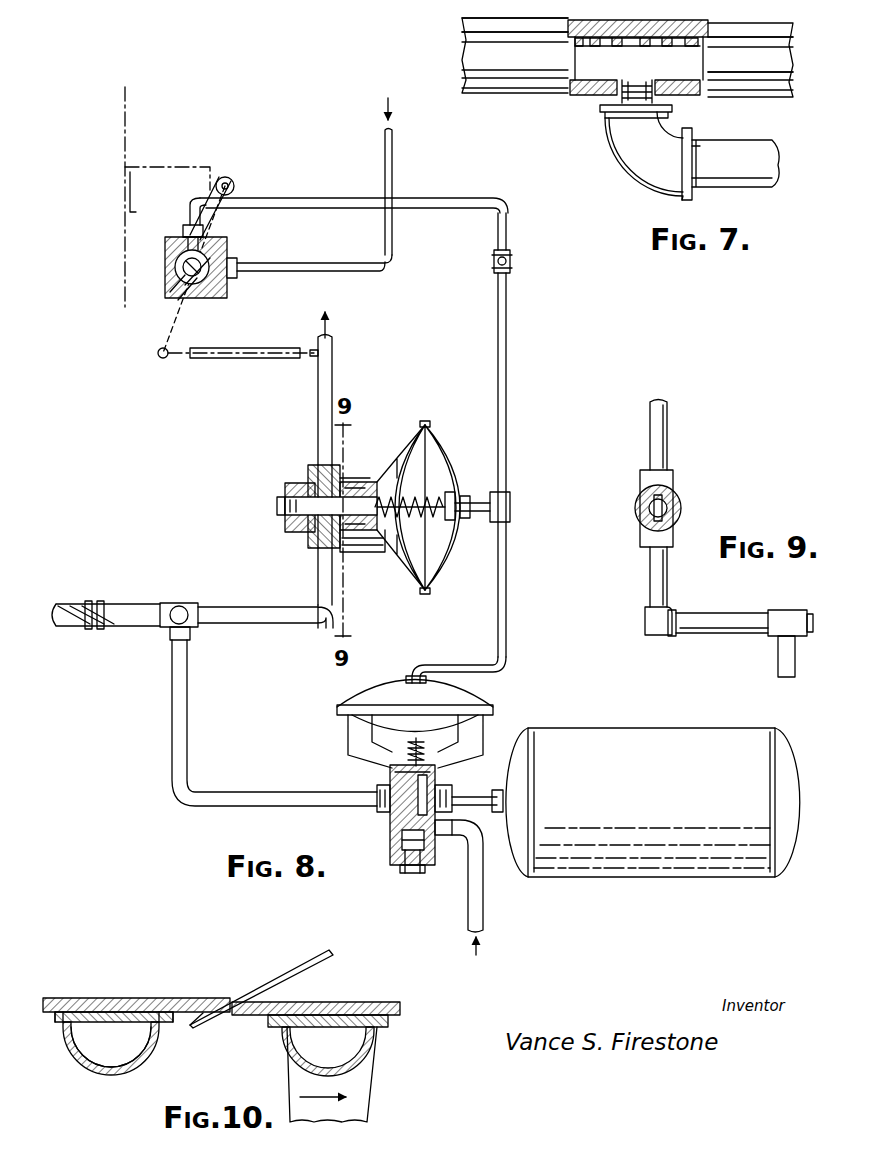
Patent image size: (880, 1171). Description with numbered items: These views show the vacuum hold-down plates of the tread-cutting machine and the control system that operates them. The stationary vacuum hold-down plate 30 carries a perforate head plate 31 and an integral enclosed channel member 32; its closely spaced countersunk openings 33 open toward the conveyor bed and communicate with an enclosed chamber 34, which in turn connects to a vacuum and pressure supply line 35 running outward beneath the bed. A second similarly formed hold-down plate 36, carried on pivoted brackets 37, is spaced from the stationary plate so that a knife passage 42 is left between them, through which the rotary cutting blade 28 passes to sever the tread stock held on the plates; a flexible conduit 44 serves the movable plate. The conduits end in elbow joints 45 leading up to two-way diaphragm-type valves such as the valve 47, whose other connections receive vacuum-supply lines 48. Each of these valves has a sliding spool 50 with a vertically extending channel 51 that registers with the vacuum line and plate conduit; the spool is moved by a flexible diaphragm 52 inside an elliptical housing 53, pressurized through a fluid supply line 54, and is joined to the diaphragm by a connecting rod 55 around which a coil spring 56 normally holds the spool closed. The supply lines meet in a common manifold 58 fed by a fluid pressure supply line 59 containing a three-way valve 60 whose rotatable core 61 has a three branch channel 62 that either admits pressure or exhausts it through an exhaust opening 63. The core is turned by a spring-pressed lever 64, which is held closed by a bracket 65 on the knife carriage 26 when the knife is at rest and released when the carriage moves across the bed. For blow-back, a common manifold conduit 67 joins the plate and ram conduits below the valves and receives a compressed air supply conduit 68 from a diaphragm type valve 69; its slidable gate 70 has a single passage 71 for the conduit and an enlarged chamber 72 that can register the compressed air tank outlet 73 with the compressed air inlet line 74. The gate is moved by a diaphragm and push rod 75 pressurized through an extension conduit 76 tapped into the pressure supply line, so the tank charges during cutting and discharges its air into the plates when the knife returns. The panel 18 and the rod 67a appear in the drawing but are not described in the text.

In FIG. 7, the instrument panel 18 is at (770, 33).
In FIG. 10, the instrument panel 18 is at (150, 998).
In FIG. 8, the knife carriage 26 is at (126, 128).
In FIG. 10, the rotary cutting blade 28 is at (290, 975).
In FIG. 7, the stationary vacuum hold-down plate 30 is at (512, 55).
In FIG. 10, the stationary vacuum hold-down plate 30 is at (60, 1026).
In FIG. 7, the head plate 31 is at (470, 38).
In FIG. 10, the head plate 31 is at (165, 1025).
In FIG. 7, the channel member 32 is at (557, 95).
In FIG. 10, the channel member 32 is at (125, 1066).
In FIG. 7, the countersunk openings 33 is at (612, 48).
In FIG. 10, the countersunk openings 33 is at (128, 1022).
In FIG. 7, the enclosed chamber 34 is at (700, 62).
In FIG. 10, the enclosed chamber 34 is at (84, 1062).
In FIG. 7, the vacuum and pressure supply line 35 is at (742, 145).
In FIG. 10, the second hold-down plate 36 is at (376, 1028).
In FIG. 10, the supporting brackets 37 is at (355, 1088).
In FIG. 10, the knife passage 42 is at (222, 1020).
In FIG. 8, the flexible conduit 44 is at (72, 628).
In FIG. 8, the elbow joints 45 is at (300, 608).
In FIG. 9, the elbow joints 45 is at (648, 614).
In FIG. 8, the diaphragm-type valve 47 is at (362, 554).
In FIG. 9, the diaphragm-type valve 47 is at (676, 498).
In FIG. 8, the vacuum-supply line 48 is at (334, 378).
In FIG. 9, the vacuum-supply line 48 is at (657, 425).
In FIG. 8, the sliding spool 50 is at (296, 484).
In FIG. 9, the sliding spool 50 is at (683, 512).
In FIG. 8, the vertically extending channel 51 is at (352, 484).
In FIG. 9, the vertically extending channel 51 is at (664, 497).
In FIG. 8, the flexible diaphragm 52 is at (448, 462).
In FIG. 8, the elliptical housing 53 is at (452, 548).
In FIG. 8, the fluid supply line 54 is at (508, 492).
In FIG. 8, the connecting rod 55 is at (412, 568).
In FIG. 8, the coil spring 56 is at (420, 440).
In FIG. 8, the common manifold 58 is at (512, 258).
In FIG. 8, the fluid pressure supply line 59 is at (368, 272).
In FIG. 8, the three-way valve 60 is at (168, 275).
In FIG. 8, the rotatable core 61 is at (200, 290).
In FIG. 8, the three branch channel 62 is at (205, 262).
In FIG. 8, the exhaust opening 63 is at (176, 288).
In FIG. 8, the lever 64 is at (218, 222).
In FIG. 8, the bracket 65 is at (210, 170).
In FIG. 8, the common manifold conduit 67 is at (192, 632).
In FIG. 9, the common manifold conduit 67 is at (740, 620).
In FIG. 8, the link rod 67a is at (268, 350).
In FIG. 8, the compressed air supply conduit 68 is at (188, 700).
In FIG. 9, the compressed air supply conduit 68 is at (778, 662).
In FIG. 8, the diaphragm type valve 69 is at (445, 696).
In FIG. 8, the slidable gate 70 is at (392, 822).
In FIG. 8, the single passage 71 is at (380, 796).
In FIG. 8, the enlarged chamber 72 is at (452, 790).
In FIG. 8, the compressed air tank outlet 73 is at (478, 808).
In FIG. 8, the compressed air inlet line 74 is at (470, 876).
In FIG. 8, the push rod 75 is at (430, 748).
In FIG. 8, the extension conduit 76 is at (507, 612).